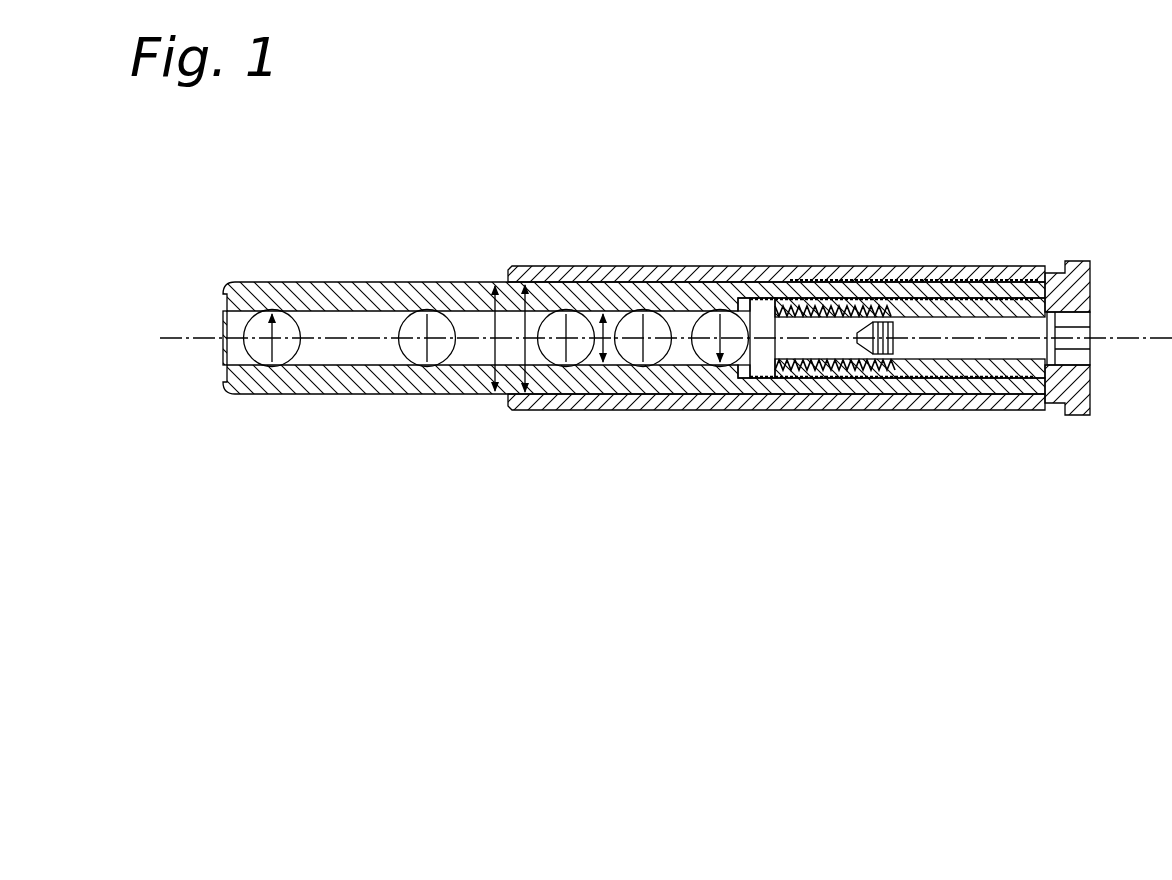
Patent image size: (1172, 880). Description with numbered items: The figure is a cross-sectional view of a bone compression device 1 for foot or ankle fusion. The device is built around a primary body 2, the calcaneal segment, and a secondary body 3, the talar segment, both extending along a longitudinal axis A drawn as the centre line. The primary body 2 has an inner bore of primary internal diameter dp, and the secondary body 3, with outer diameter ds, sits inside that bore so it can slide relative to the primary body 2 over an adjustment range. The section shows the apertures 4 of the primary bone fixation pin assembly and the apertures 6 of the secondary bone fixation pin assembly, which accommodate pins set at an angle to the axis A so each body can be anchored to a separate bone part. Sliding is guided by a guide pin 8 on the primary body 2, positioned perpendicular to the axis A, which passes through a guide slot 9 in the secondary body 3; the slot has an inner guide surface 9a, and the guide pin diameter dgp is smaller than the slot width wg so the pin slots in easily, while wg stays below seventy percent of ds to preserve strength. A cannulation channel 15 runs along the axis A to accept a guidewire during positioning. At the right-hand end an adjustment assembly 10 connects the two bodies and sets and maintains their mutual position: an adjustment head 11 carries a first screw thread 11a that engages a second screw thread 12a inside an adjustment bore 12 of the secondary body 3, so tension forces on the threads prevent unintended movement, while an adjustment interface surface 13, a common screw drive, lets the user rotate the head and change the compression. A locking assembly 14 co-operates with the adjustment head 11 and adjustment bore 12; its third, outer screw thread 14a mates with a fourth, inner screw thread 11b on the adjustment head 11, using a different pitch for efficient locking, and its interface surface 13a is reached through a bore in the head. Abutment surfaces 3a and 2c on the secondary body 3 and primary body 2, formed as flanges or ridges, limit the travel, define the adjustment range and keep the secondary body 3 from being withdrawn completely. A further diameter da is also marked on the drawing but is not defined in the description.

The bone compression device 1 is at (205, 478).
The primary body 2 is at (540, 410).
The abutment surface 2c is at (787, 279).
The secondary body 3 is at (337, 300).
The abutment surface 3a is at (980, 283).
The apertures 4 is at (558, 310).
The apertures 6 is at (412, 352).
The guide pin 8 is at (622, 300).
The guide slot 9 is at (686, 300).
The inner guide surface 9a is at (697, 366).
The adjustment assembly 10 is at (1090, 262).
The adjustment head 11 is at (950, 378).
The first screw thread 11a is at (892, 313).
The fourth screw thread 11b is at (878, 300).
The adjustment bore 12 is at (748, 378).
The second screw thread 12a is at (785, 375).
The adjustment interface surface 13 is at (1092, 322).
The interface surface 13a is at (890, 352).
The locking assembly 14 is at (875, 356).
The third screw thread 14a is at (848, 356).
The cannulation channel 15 is at (232, 350).
The longitudinal axis A is at (184, 332).
The ball diameter da is at (291, 310).
The guide pin diameter dgp is at (656, 309).
The primary internal diameter dp is at (524, 385).
The outer diameter ds is at (494, 378).
The guide slot width wg is at (603, 366).